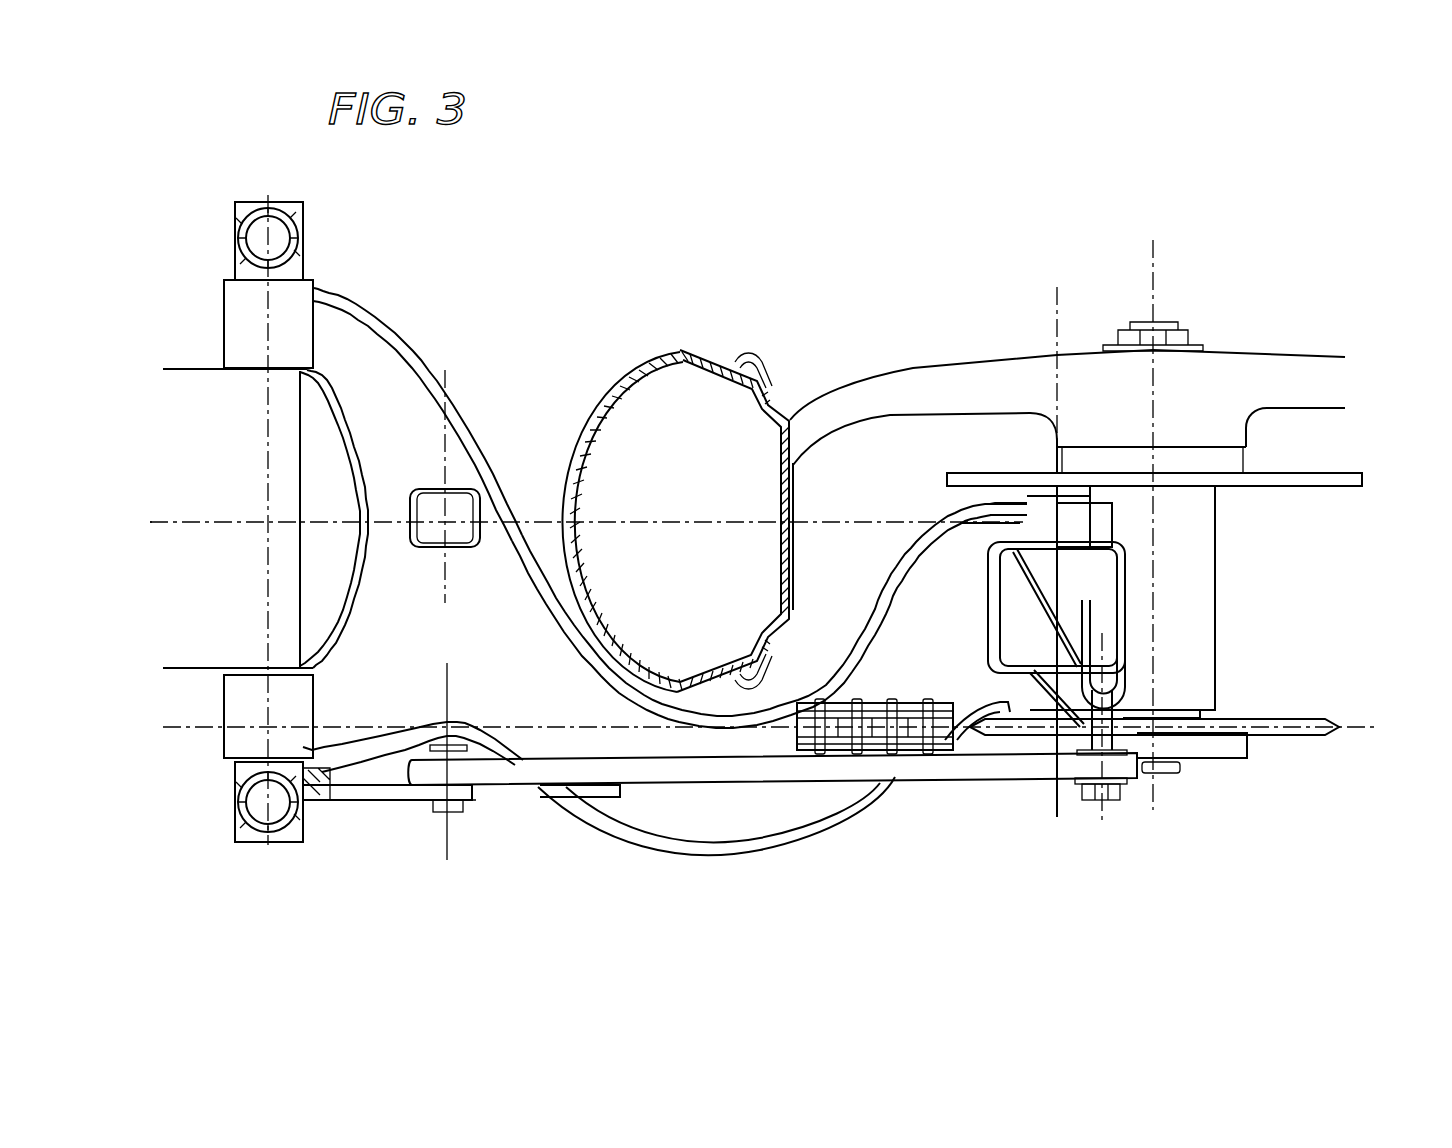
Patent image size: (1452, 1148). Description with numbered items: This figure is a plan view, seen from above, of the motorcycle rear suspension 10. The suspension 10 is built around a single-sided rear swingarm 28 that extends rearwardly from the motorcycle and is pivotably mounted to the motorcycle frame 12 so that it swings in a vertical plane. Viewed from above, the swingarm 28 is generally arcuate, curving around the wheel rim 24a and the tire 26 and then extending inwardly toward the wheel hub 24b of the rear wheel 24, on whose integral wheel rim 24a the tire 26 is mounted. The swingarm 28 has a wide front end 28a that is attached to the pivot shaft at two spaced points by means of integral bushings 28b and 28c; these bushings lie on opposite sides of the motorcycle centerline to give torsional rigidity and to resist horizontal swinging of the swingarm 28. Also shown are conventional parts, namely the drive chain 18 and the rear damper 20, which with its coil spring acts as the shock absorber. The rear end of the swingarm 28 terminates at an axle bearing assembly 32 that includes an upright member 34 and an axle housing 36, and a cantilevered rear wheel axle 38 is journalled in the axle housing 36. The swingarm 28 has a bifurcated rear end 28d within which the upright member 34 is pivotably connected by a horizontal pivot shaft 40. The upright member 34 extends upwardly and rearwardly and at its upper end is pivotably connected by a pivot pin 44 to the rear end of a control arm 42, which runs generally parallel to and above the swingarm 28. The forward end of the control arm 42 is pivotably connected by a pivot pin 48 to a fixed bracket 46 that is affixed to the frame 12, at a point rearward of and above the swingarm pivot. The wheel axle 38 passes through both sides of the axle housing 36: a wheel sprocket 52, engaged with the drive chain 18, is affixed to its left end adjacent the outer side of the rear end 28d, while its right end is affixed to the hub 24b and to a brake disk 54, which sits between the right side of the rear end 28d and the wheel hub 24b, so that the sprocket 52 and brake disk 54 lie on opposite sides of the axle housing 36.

The suspension 10 is at (676, 233).
The motorcycle frame 12 is at (247, 210).
The drive chain 18 is at (890, 740).
The rear damper 20 is at (432, 507).
The rear wheel 24 is at (900, 362).
The wheel rim 24a is at (795, 560).
The wheel hub 24b is at (1250, 380).
The tire 26 is at (643, 375).
The single-sided rear swingarm 28 is at (762, 858).
The wide front end 28a is at (367, 340).
The integral bushing 28b is at (262, 312).
The integral bushing 28c is at (263, 688).
The bifurcated rear end 28d is at (955, 522).
The axle bearing assembly 32 is at (1227, 662).
The upright member 34 is at (1103, 585).
The axle housing 36 is at (1195, 605).
The rear wheel axle 38 is at (1175, 775).
The horizontal pivot shaft 40 is at (1057, 473).
The control arm 42 is at (650, 775).
The pivot pin 44 is at (1095, 800).
The fixed bracket 46 is at (377, 808).
The pivot pin 48 is at (427, 808).
The wheel sprocket 52 is at (1333, 721).
The brake disk 54 is at (1364, 485).